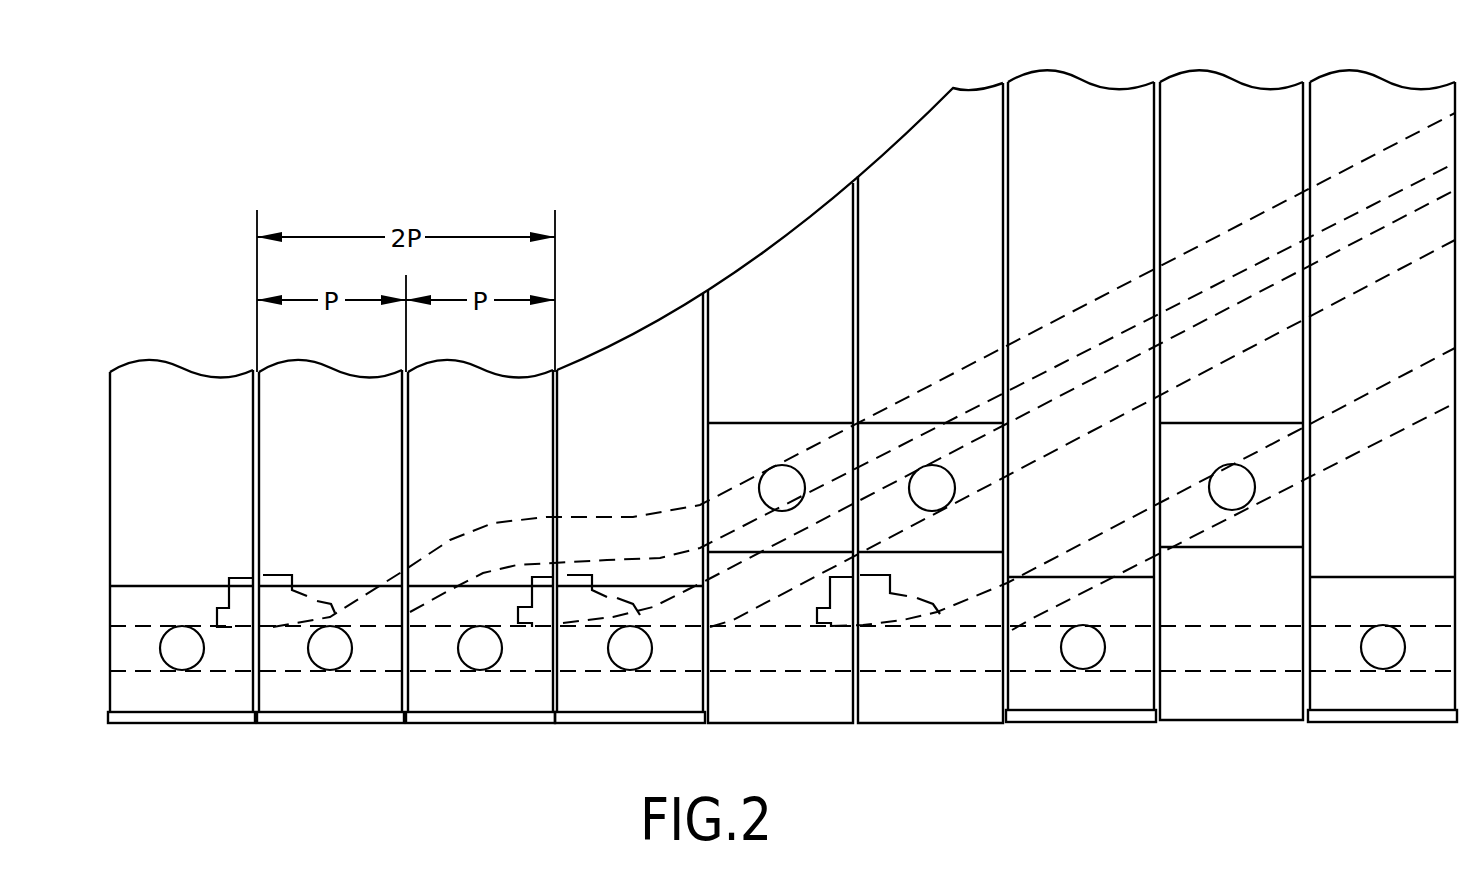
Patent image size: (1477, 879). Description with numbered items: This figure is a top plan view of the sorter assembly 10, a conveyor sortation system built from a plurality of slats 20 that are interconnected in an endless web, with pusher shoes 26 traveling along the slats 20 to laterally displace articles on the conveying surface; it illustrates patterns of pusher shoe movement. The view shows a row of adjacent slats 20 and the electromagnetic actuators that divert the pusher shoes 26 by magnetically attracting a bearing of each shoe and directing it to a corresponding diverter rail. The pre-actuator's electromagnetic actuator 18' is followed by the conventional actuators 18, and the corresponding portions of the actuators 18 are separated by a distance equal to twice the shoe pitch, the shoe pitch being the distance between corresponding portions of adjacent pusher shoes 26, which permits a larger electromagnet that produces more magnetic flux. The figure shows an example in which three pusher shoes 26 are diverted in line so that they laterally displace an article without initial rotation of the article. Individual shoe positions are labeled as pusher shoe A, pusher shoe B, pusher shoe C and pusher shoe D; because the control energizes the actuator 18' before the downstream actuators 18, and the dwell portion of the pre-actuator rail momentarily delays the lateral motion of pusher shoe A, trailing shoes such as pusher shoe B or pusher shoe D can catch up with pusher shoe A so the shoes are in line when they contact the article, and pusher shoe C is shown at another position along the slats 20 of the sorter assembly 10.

The sorter assembly 10 is at (782, 363).
The slats 20 is at (633, 338).
The actuators 18 is at (732, 616).
The electromagnetic actuator 18' is at (284, 542).
The pusher shoes 26 is at (778, 553).
The pusher shoe A is at (785, 423).
The pusher shoe B is at (935, 423).
The position C is at (1078, 576).
The pusher shoe D is at (1233, 423).